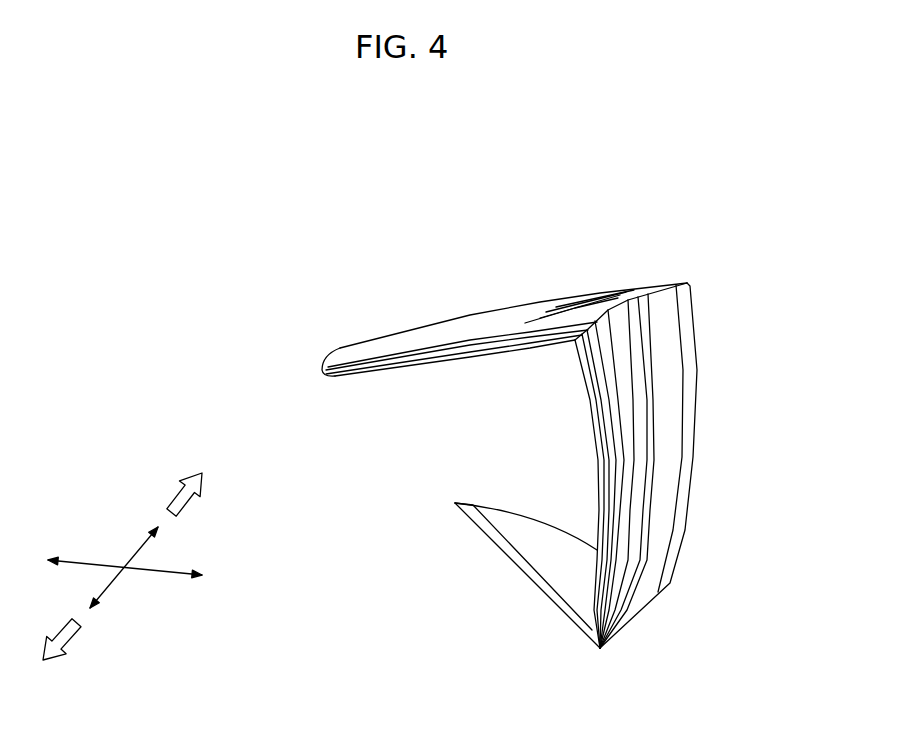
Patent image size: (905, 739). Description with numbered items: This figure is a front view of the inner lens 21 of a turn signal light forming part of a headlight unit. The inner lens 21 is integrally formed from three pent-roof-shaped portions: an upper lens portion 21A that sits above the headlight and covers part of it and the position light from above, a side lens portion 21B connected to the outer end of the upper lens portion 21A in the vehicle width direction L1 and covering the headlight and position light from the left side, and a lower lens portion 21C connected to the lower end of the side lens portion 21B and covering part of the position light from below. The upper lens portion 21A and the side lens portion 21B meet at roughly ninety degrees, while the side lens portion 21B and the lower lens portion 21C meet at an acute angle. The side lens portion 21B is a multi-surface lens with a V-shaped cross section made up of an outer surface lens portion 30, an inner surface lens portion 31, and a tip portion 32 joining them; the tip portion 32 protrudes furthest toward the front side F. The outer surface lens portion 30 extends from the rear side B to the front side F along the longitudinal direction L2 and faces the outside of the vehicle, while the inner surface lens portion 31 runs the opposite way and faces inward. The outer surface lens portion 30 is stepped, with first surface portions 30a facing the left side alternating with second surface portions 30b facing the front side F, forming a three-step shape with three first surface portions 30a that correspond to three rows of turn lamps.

The inner lens 21 is at (560, 396).
The upper lens portion 21A is at (459, 306).
The side lens portion 21B is at (699, 465).
The lower lens portion 21C is at (515, 575).
The outer surface lens portion 30 is at (652, 471).
The first surface portion 30a is at (691, 471).
The second surface portion 30b is at (689, 479).
The inner surface lens portion 31 is at (565, 489).
The tip portion 32 is at (563, 491).
The rear side B is at (214, 506).
The front side F is at (95, 644).
The vehicle width direction L1 is at (131, 587).
The longitudinal direction L2 is at (89, 570).